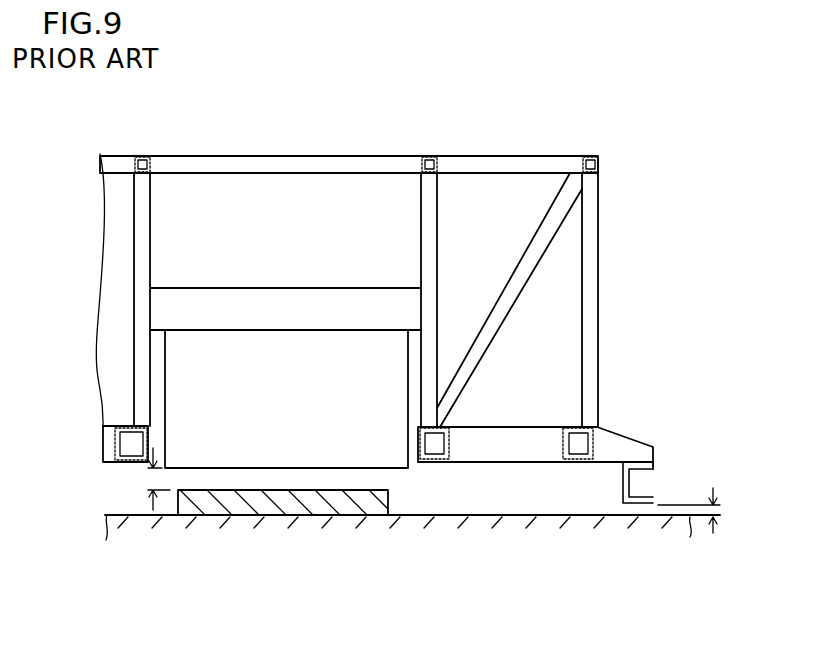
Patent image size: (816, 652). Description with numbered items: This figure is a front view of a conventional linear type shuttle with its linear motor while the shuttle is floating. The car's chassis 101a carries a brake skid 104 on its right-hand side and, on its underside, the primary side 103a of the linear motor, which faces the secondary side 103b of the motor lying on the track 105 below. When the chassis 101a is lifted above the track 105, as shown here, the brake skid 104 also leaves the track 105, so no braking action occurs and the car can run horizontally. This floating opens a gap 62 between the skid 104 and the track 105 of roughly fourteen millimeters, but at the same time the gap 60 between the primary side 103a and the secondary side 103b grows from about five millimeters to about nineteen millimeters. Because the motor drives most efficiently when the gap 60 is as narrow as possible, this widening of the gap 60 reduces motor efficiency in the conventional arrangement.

The chassis 101a is at (340, 156).
The primary side 103a is at (182, 403).
The secondary side 103b is at (267, 508).
The brake skid 104 is at (628, 443).
The track 105 is at (455, 516).
The gap 60 is at (141, 479).
The gap 62 is at (705, 510).